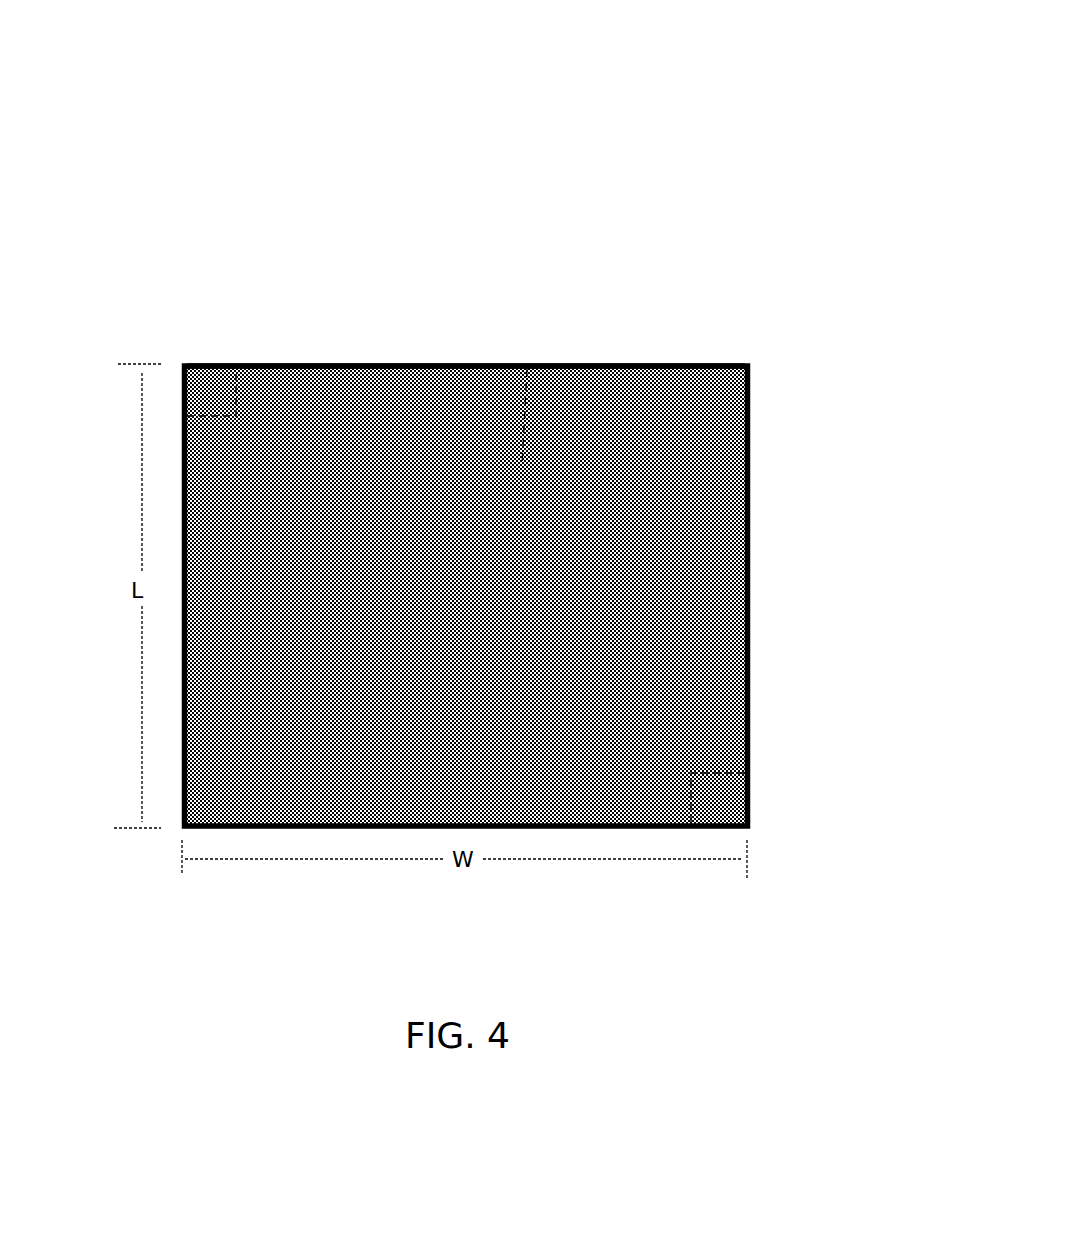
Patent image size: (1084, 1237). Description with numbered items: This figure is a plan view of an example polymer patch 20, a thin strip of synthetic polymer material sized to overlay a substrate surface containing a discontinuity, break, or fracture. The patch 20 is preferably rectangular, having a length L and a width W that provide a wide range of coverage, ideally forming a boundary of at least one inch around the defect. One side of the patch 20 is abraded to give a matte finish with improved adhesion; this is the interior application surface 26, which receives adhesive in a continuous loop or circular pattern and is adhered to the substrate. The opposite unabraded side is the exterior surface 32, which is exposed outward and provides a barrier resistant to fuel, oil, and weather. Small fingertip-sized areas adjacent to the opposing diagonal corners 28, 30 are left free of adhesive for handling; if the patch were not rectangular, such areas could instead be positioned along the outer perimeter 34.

The patch 20 is at (509, 429).
The application surface 26 is at (372, 453).
The diagonal corner 28 is at (193, 379).
The diagonal corner 30 is at (718, 792).
The exterior surface 32 is at (519, 361).
The outer perimeter 34 is at (578, 362).